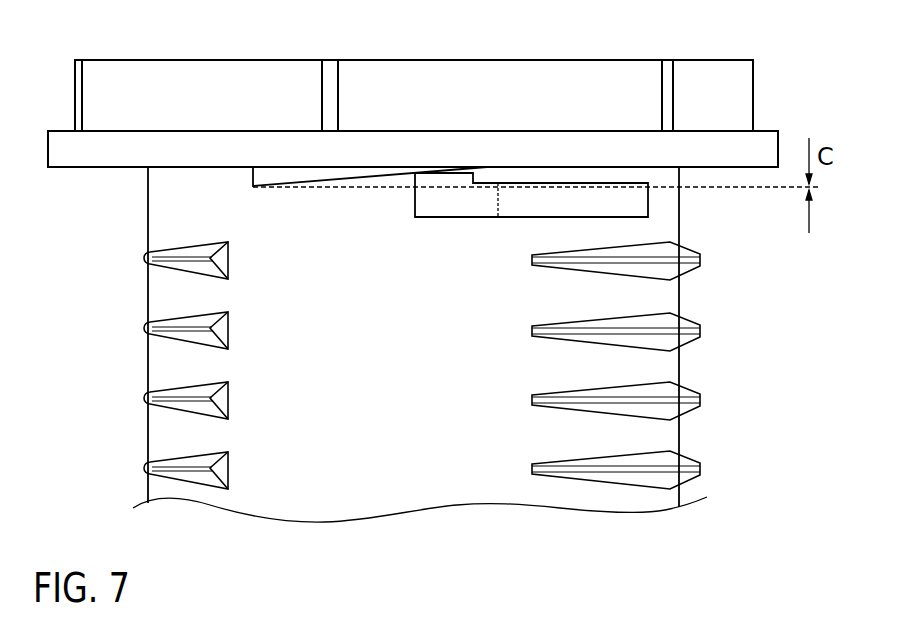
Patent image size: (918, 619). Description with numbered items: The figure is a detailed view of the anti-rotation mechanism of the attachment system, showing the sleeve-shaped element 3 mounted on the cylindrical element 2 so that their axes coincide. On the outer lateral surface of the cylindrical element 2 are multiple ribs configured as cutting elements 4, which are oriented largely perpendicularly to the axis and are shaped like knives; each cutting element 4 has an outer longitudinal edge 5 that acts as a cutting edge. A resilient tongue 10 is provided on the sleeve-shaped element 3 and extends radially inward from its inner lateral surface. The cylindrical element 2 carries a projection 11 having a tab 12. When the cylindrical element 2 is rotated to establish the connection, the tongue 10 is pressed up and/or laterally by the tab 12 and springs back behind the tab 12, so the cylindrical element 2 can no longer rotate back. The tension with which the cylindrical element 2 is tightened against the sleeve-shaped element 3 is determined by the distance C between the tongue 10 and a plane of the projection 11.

The cylindrical element 2 is at (454, 478).
The sleeve-shaped element 3 is at (116, 150).
The cutting elements 4 is at (178, 264).
The outer longitudinal edge 5 is at (157, 260).
The tongue 10 is at (275, 175).
The projection 11 is at (448, 205).
The tab 12 is at (458, 175).